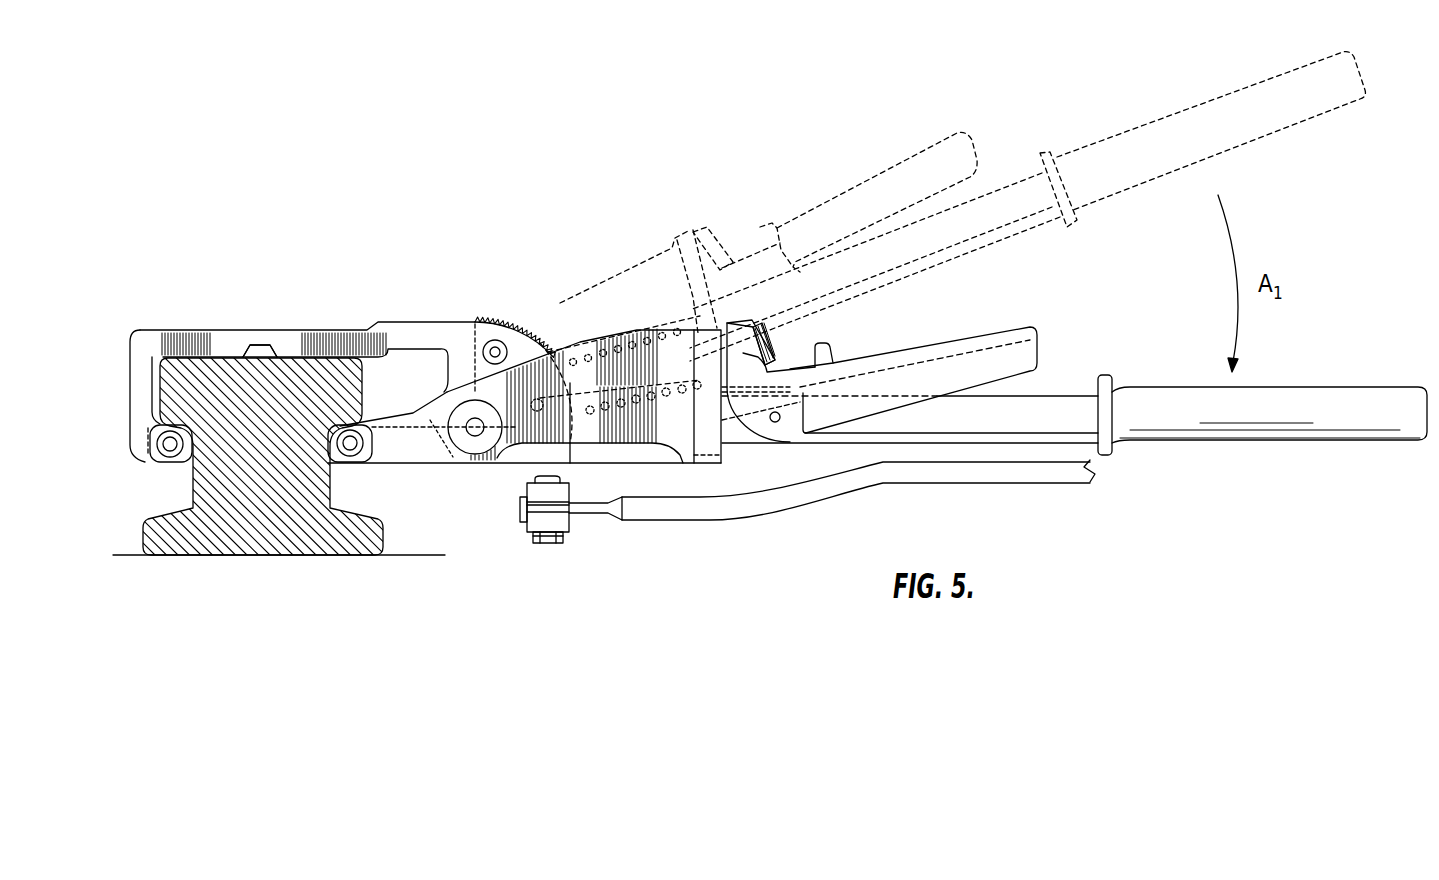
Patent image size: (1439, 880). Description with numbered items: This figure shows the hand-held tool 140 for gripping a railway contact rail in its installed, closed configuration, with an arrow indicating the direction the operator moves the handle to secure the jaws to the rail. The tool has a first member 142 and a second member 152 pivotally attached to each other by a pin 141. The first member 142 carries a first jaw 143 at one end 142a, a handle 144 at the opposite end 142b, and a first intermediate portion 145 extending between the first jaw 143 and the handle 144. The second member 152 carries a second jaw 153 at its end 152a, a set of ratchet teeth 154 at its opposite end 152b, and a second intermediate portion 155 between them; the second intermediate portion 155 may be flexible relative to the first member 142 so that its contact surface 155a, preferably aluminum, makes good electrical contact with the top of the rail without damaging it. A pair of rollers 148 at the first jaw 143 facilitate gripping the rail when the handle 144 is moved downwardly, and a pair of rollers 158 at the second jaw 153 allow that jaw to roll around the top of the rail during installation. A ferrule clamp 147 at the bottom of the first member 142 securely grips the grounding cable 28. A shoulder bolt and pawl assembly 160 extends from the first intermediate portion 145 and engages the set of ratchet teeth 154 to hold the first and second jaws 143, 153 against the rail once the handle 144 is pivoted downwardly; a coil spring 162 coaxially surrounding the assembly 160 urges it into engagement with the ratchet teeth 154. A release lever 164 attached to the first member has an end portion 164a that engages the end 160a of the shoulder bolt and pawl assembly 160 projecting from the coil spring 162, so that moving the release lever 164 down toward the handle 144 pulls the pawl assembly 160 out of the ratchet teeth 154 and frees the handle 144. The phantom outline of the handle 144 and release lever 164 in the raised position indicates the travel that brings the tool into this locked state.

The hand-held tool 140 is at (362, 245).
The rollers 148 is at (327, 445).
The second member 152 is at (215, 328).
The end of second member 152a is at (152, 328).
The right jaw of clamp 152b is at (452, 323).
The second intermediate portion 155 is at (265, 330).
The contact surface 155a is at (307, 363).
The second jaw 153 is at (142, 447).
The rollers 158 is at (200, 457).
The first jaw 143 is at (370, 447).
The end of first member 142a is at (392, 453).
The pin 141 is at (473, 431).
The set of ratchet teeth 154 is at (517, 330).
The first intermediate portion 145 is at (707, 443).
The coil spring 162 is at (625, 332).
The first member 142 is at (685, 332).
The shoulder bolt and pawl assembly 160 is at (771, 329).
The end of shoulder bolt and pawl assembly 160a is at (773, 331).
The end portion of release lever 164a is at (792, 388).
The release lever 164 is at (962, 343).
The opposite end of first member 142b is at (1058, 438).
The handle 144 is at (1260, 430).
The ferrule clamp 147 is at (547, 517).
The grounding cable 28 is at (848, 483).